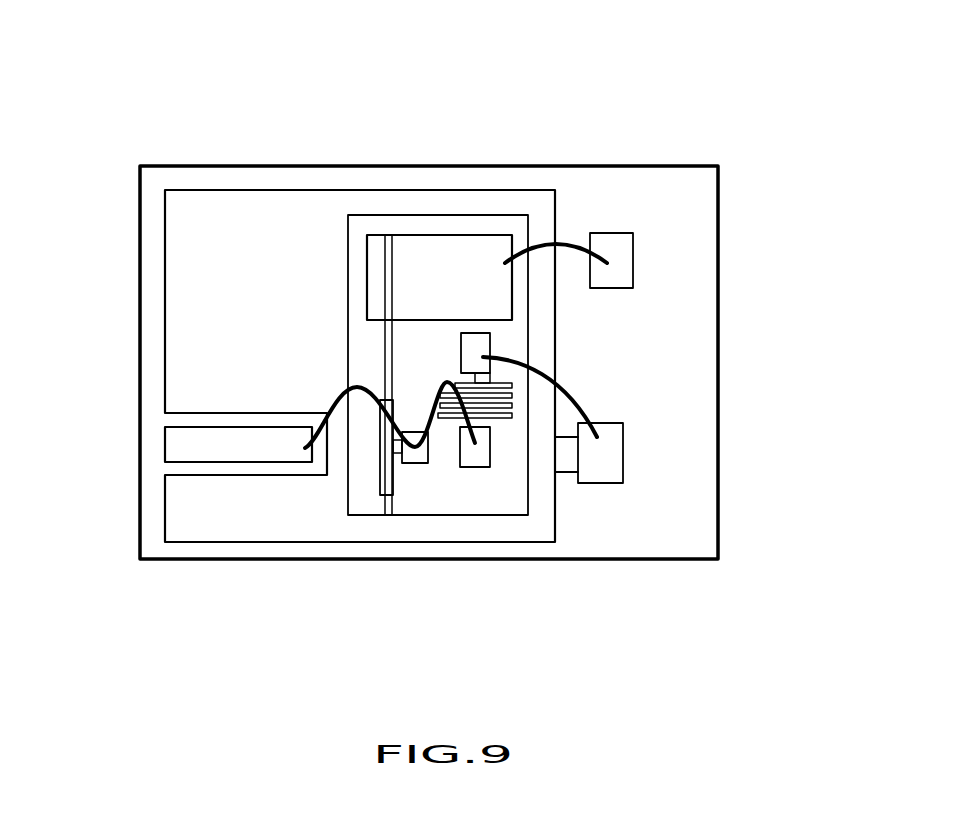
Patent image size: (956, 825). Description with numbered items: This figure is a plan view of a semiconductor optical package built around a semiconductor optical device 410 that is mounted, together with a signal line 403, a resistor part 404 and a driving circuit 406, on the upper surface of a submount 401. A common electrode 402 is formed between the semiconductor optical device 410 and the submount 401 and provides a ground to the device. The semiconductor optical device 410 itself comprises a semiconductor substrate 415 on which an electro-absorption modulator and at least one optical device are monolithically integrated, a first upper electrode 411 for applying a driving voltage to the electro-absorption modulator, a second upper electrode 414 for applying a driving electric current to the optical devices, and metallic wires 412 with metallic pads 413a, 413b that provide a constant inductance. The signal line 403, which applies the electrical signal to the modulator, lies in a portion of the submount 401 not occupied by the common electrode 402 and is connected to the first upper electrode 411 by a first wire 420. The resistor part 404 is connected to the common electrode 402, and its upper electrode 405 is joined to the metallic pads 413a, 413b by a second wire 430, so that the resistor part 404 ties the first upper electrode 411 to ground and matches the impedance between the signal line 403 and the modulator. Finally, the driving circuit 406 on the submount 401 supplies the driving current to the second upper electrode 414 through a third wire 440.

The submount 401 is at (700, 247).
The common electrode 402 is at (200, 205).
The signal line 403 is at (170, 446).
The resistor part 404 is at (567, 465).
The upper electrode of the resistor part 405 is at (615, 457).
The driving circuit 406 is at (616, 240).
The semiconductor optical device 410 is at (438, 214).
The first upper electrode 411 is at (416, 463).
The metallic wires 412 is at (448, 420).
The metallic pad 413a is at (485, 350).
The metallic pad 413b is at (477, 467).
The second upper electrode 414 is at (384, 218).
The semiconductor substrate 415 is at (362, 507).
The first wire 420 is at (338, 393).
The second wire 430 is at (585, 405).
The third wire 440 is at (566, 243).